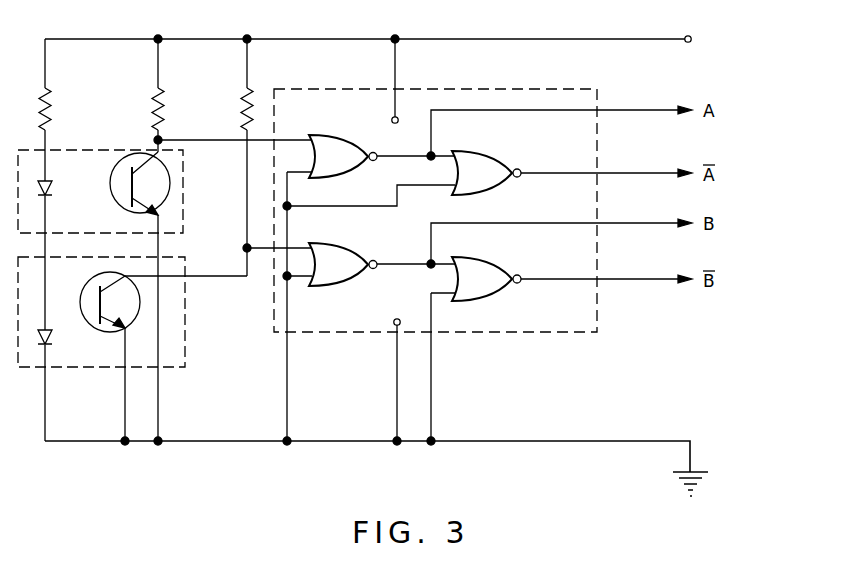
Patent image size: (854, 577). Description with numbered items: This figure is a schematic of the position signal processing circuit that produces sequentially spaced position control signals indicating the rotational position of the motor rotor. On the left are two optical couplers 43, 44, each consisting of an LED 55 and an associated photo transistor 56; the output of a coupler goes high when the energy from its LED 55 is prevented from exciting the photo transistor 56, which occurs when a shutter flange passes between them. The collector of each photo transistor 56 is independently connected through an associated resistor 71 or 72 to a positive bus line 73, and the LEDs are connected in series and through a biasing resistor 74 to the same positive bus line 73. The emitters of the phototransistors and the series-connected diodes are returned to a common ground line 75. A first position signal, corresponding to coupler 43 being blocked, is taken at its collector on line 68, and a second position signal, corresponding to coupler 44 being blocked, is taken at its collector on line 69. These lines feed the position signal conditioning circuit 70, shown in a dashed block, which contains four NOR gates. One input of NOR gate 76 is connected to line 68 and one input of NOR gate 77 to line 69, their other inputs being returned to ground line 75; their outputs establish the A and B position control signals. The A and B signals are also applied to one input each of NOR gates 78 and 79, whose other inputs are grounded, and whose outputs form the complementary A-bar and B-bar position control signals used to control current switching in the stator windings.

The optical coupler 43 is at (185, 197).
The optical coupler 44 is at (186, 317).
The LED 55 is at (50, 186).
The photo transistor 56 is at (119, 209).
The line 68 is at (219, 139).
The line 69 is at (212, 277).
The position signal conditioning circuit 70 is at (538, 335).
The resistor 71 is at (164, 98).
The resistor 72 is at (254, 101).
The positive bus line 73 is at (201, 39).
The biasing resistor 74 is at (51, 98).
The common ground line 75 is at (253, 441).
The NOR gate 76 is at (335, 134).
The NOR gate 77 is at (337, 243).
The NOR gate 78 is at (489, 150).
The NOR gate 79 is at (489, 256).